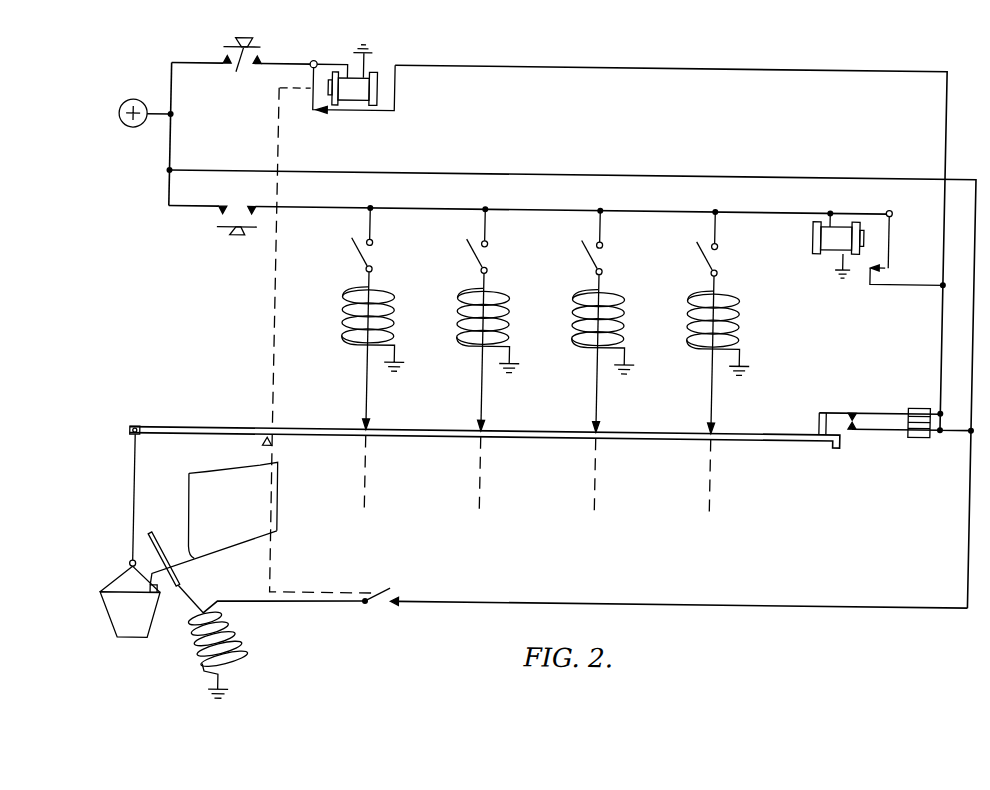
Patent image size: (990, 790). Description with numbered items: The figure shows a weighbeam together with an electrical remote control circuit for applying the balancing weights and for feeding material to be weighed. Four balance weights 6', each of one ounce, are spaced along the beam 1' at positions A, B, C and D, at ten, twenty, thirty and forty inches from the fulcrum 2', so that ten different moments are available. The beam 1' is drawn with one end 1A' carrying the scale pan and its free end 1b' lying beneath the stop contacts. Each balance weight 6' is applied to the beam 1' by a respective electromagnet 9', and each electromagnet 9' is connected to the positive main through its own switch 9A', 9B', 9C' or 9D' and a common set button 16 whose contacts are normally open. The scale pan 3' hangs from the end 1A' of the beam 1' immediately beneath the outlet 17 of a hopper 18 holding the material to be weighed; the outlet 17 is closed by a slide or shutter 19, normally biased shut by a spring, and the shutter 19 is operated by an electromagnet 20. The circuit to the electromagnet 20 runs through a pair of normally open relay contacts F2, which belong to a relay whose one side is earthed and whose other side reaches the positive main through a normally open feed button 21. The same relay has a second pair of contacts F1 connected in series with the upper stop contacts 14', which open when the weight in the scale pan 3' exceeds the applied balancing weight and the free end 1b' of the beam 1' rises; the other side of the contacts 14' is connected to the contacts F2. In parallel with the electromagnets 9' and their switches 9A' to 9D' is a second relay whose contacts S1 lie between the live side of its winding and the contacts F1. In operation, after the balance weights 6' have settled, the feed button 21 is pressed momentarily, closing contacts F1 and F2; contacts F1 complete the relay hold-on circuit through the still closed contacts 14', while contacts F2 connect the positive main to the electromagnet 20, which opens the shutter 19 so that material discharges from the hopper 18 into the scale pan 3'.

The feed button 21 is at (242, 64).
The set button 16 is at (213, 218).
The relay contacts F1 is at (318, 112).
The relay contacts F2 is at (388, 590).
The switch 9A' is at (384, 248).
The switch 9B' is at (499, 249).
The switch 9C' is at (614, 250).
The switch 9D' is at (729, 252).
The electromagnet 9' is at (527, 330).
The balance weight 6' is at (528, 360).
The weight position A is at (363, 485).
The weight position B is at (479, 486).
The weight position C is at (595, 486).
The weight position D is at (711, 488).
The beam 1' is at (485, 423).
The rail end support 1A' is at (128, 412).
The free end of the beam 1b' is at (828, 442).
The fulcrum 2' is at (249, 448).
The upper stop contacts 14' is at (888, 434).
The relay contacts S1 is at (890, 260).
The hopper 18 is at (284, 496).
The outlet 17 is at (188, 558).
The slide or shutter 19 is at (164, 530).
The scale pan 3' is at (121, 536).
The electromagnet 20 is at (208, 651).